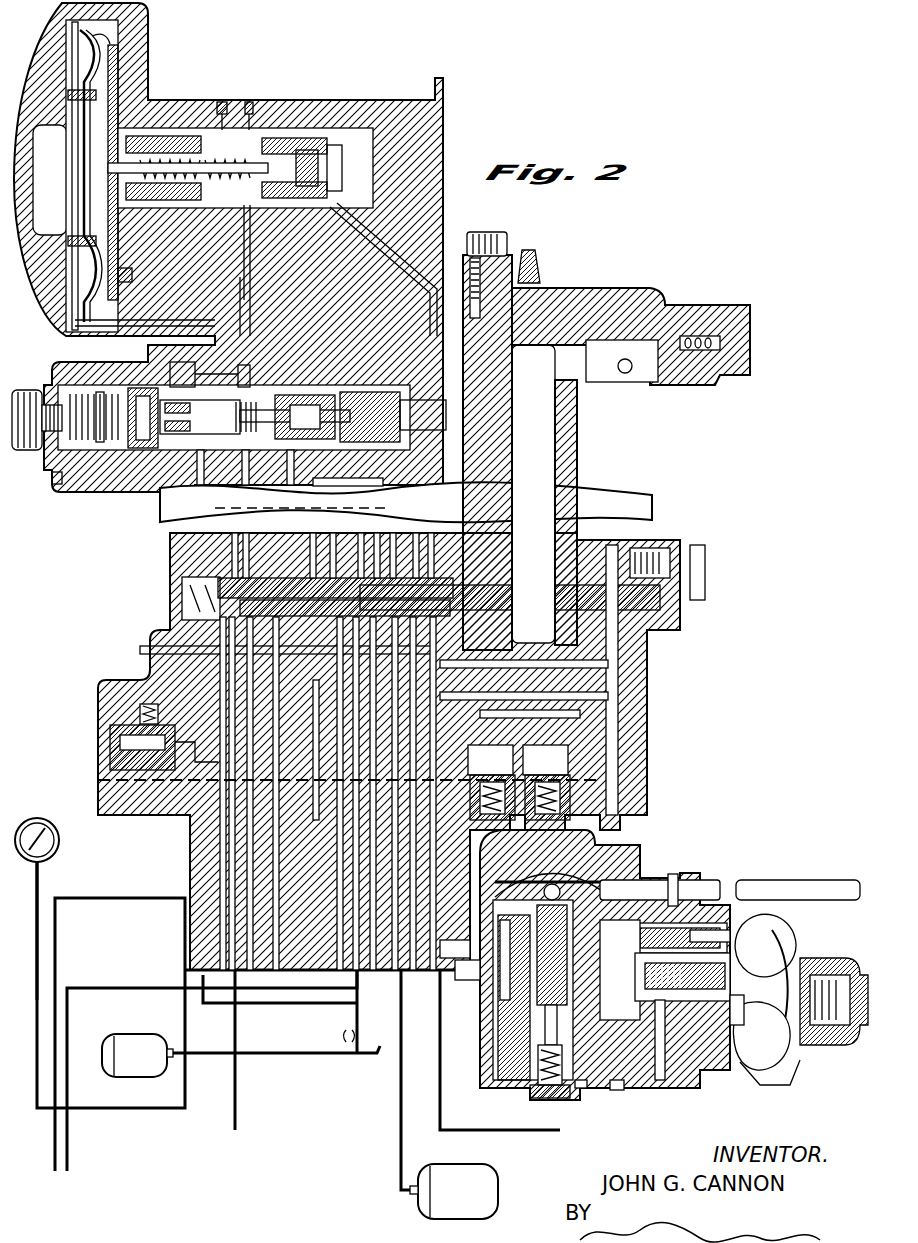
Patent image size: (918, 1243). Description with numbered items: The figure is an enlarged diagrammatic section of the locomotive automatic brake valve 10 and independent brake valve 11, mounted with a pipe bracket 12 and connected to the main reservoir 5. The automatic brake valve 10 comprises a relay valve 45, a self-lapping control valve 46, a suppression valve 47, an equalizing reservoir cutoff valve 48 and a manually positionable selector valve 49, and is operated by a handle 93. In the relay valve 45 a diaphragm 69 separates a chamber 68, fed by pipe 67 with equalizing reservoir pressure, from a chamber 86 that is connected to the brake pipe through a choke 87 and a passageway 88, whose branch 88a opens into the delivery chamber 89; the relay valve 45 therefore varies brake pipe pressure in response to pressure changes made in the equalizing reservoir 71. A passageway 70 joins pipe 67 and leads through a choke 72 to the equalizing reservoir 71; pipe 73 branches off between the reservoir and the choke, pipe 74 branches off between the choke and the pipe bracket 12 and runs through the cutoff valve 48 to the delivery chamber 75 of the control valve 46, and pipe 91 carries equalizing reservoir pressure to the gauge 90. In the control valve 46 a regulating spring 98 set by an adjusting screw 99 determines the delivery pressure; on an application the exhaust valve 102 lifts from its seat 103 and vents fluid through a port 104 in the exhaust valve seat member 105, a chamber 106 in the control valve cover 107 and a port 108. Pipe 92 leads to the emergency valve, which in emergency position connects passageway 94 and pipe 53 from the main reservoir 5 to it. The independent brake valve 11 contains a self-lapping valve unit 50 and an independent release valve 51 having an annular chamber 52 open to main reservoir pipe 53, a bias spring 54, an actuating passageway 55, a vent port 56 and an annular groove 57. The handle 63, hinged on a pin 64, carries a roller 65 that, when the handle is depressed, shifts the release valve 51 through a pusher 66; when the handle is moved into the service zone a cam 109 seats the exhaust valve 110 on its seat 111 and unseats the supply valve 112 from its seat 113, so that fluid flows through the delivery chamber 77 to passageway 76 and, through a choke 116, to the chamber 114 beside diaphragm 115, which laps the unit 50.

The main reservoir 5 is at (478, 1165).
The automatic brake valve 10 is at (576, 420).
The independent brake valve 11 is at (692, 1088).
The pipe bracket 12 is at (190, 845).
The relay valve 45 is at (58, 30).
The self-lapping control valve 46 is at (127, 488).
The suppression valve 47 is at (168, 612).
The equalizing reservoir cutoff valve 48 is at (98, 697).
The selector valve 49 is at (640, 678).
The self-lapping valve unit 50 is at (742, 1086).
The independent release valve 51 is at (540, 1062).
The annular chamber 52 is at (582, 1086).
The pipe 53 is at (620, 1092).
The bias spring 54 is at (550, 1100).
The actuating passageway 55 is at (662, 1092).
The atmospheric vent port 56 is at (560, 1014).
The peripheral annular groove 57 is at (530, 1030).
The brake valve handle 63 is at (790, 886).
The pin 64 is at (500, 880).
The roller 65 is at (556, 900).
The pusher 66 is at (560, 956).
The pipe 67 is at (160, 325).
The chamber 68 is at (72, 284).
The diaphragm 69 is at (118, 44).
The passageway 70 is at (364, 990).
The equalizing reservoir 71 is at (160, 1028).
The choke 72 is at (352, 1036).
The pipe 73 is at (378, 1060).
The pipe 74 is at (262, 460).
The delivery chamber 75 is at (246, 378).
The passageway 76 is at (664, 923).
The delivery chamber 77 is at (732, 1062).
The chamber 86 is at (118, 58).
The choke 87 is at (128, 262).
The passageway 88 is at (244, 296).
The branch 88a is at (248, 240).
The delivery chamber 89 is at (224, 204).
The equalizing reservoir pressure gauge 90 is at (62, 830).
The pipe 91 is at (36, 935).
The pipe 92 is at (246, 1050).
The handle 93 is at (742, 336).
The passageway 94 is at (200, 534).
The regulating spring 98 is at (80, 394).
The adjusting screw 99 is at (20, 452).
The exhaust valve 102 is at (230, 412).
The valve seat 103 is at (230, 434).
The port 104 is at (140, 392).
The exhaust valve seat member 105 is at (176, 370).
The chamber 106 is at (100, 398).
The control valve cover 107 is at (38, 400).
The port 108 is at (60, 482).
The cam 109 is at (640, 1026).
The exhaust valve 110 is at (726, 968).
The valve seat 111 is at (792, 962).
The supply valve 112 is at (732, 990).
The valve seat 113 is at (728, 1042).
The chamber 114 is at (756, 948).
The diaphragm 115 is at (822, 1062).
The choke 116 is at (726, 938).